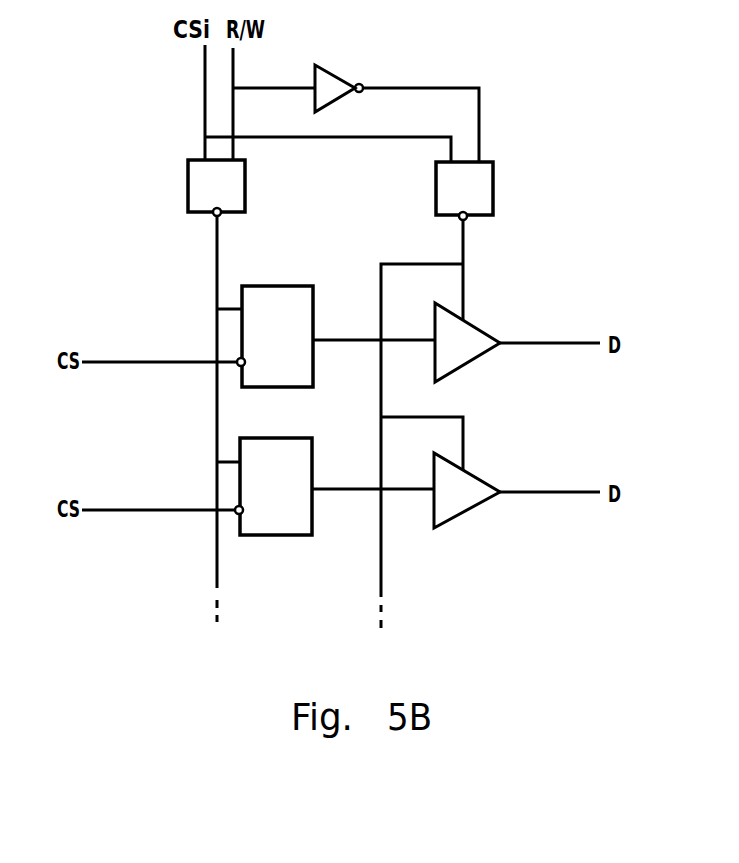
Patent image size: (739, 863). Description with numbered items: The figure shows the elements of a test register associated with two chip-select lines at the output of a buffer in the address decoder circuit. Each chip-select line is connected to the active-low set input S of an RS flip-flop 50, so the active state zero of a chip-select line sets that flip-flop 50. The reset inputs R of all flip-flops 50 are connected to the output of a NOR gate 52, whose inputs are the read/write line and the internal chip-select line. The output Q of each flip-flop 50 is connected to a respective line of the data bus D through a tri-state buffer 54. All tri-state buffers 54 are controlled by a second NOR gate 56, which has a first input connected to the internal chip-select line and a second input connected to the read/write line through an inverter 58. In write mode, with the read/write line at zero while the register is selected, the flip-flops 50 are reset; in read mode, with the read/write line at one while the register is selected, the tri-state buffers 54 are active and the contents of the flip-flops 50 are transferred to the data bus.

The RS flip-flop 50 is at (278, 286).
The NOR gate 52 is at (188, 160).
The tri-state buffer 54 is at (473, 350).
The NOR gate 56 is at (493, 163).
The inverter 58 is at (338, 78).